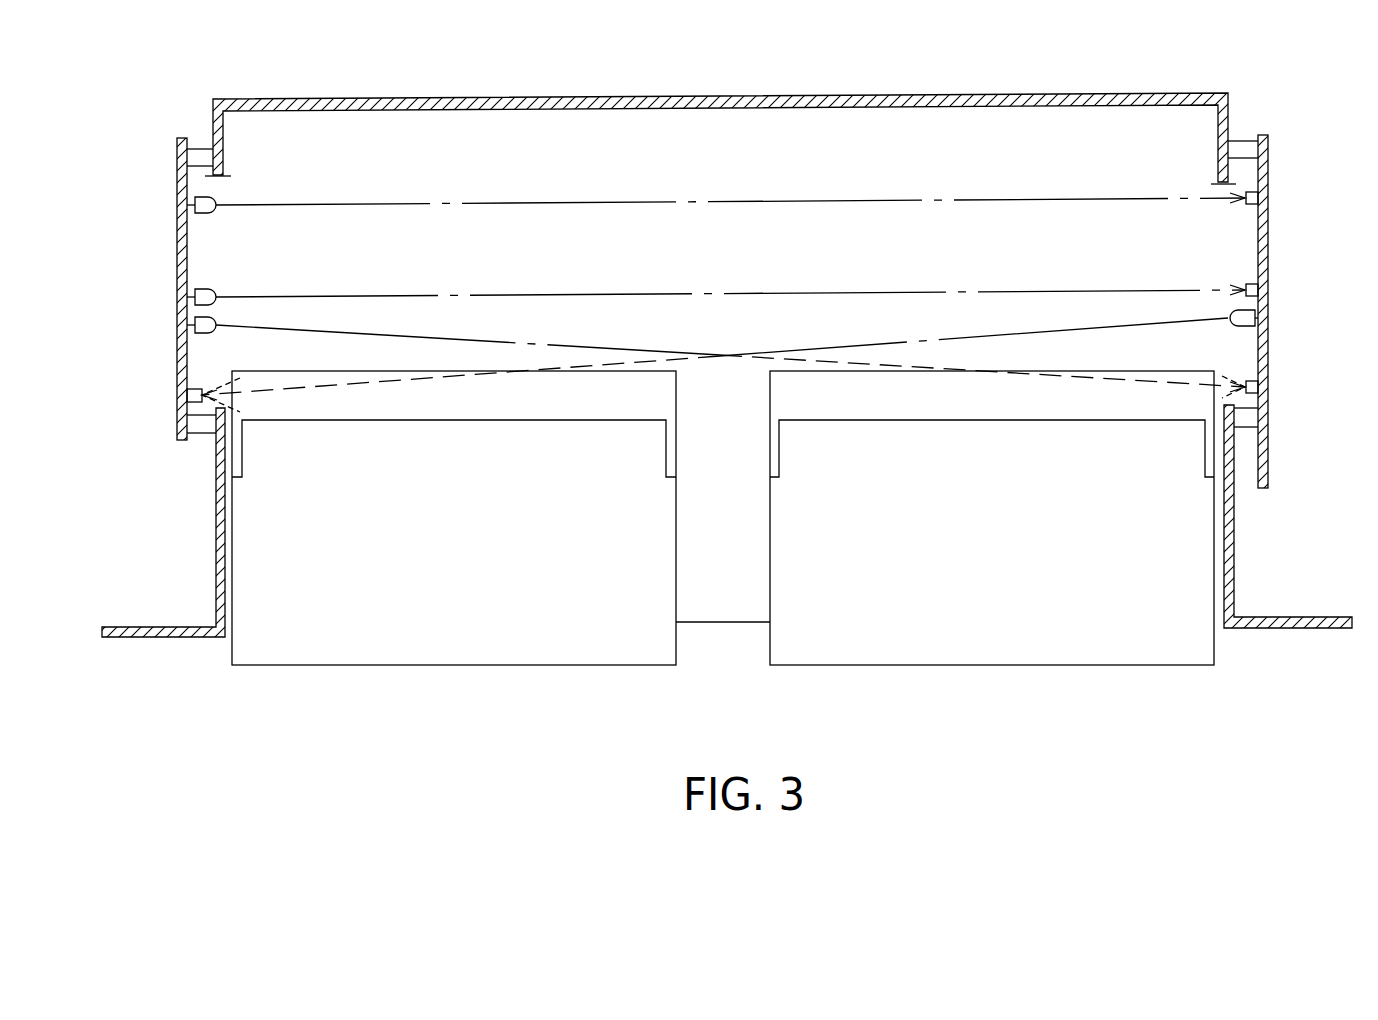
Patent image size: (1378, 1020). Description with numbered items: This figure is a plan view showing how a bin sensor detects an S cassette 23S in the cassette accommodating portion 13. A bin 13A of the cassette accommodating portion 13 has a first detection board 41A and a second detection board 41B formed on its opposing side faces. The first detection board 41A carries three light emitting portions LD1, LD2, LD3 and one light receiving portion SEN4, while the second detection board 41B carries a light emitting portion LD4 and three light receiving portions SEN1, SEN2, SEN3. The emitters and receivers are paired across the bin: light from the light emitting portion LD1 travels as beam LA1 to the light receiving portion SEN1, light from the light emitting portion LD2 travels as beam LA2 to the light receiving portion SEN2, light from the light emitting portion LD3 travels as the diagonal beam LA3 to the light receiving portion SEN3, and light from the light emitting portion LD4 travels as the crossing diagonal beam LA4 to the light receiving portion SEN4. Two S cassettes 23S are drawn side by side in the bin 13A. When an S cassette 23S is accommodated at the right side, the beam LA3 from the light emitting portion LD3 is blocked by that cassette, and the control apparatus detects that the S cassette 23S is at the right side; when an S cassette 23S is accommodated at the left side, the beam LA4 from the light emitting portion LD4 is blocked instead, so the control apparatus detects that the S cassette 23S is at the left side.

The cassette accommodating portion 13 is at (276, 37).
The bin 13A is at (1013, 126).
The first detection board 41A is at (176, 154).
The second detection board 41B is at (1269, 145).
The light emitting portion LD1 is at (205, 214).
The light emitting portion LD2 is at (205, 291).
The light emitting portion LD3 is at (204, 332).
The light emitting portion LD4 is at (1247, 323).
The light receiving portion SEN1 is at (1262, 198).
The light receiving portion SEN2 is at (1262, 290).
The light receiving portion SEN3 is at (1262, 387).
The light receiving portion SEN4 is at (190, 396).
The laser beam 1 LA1 is at (619, 201).
The laser beam 2 LA2 is at (662, 296).
The laser beam 3 LA3 is at (527, 350).
The laser beam 4 LA4 is at (936, 345).
The S cassette 23S is at (470, 647).